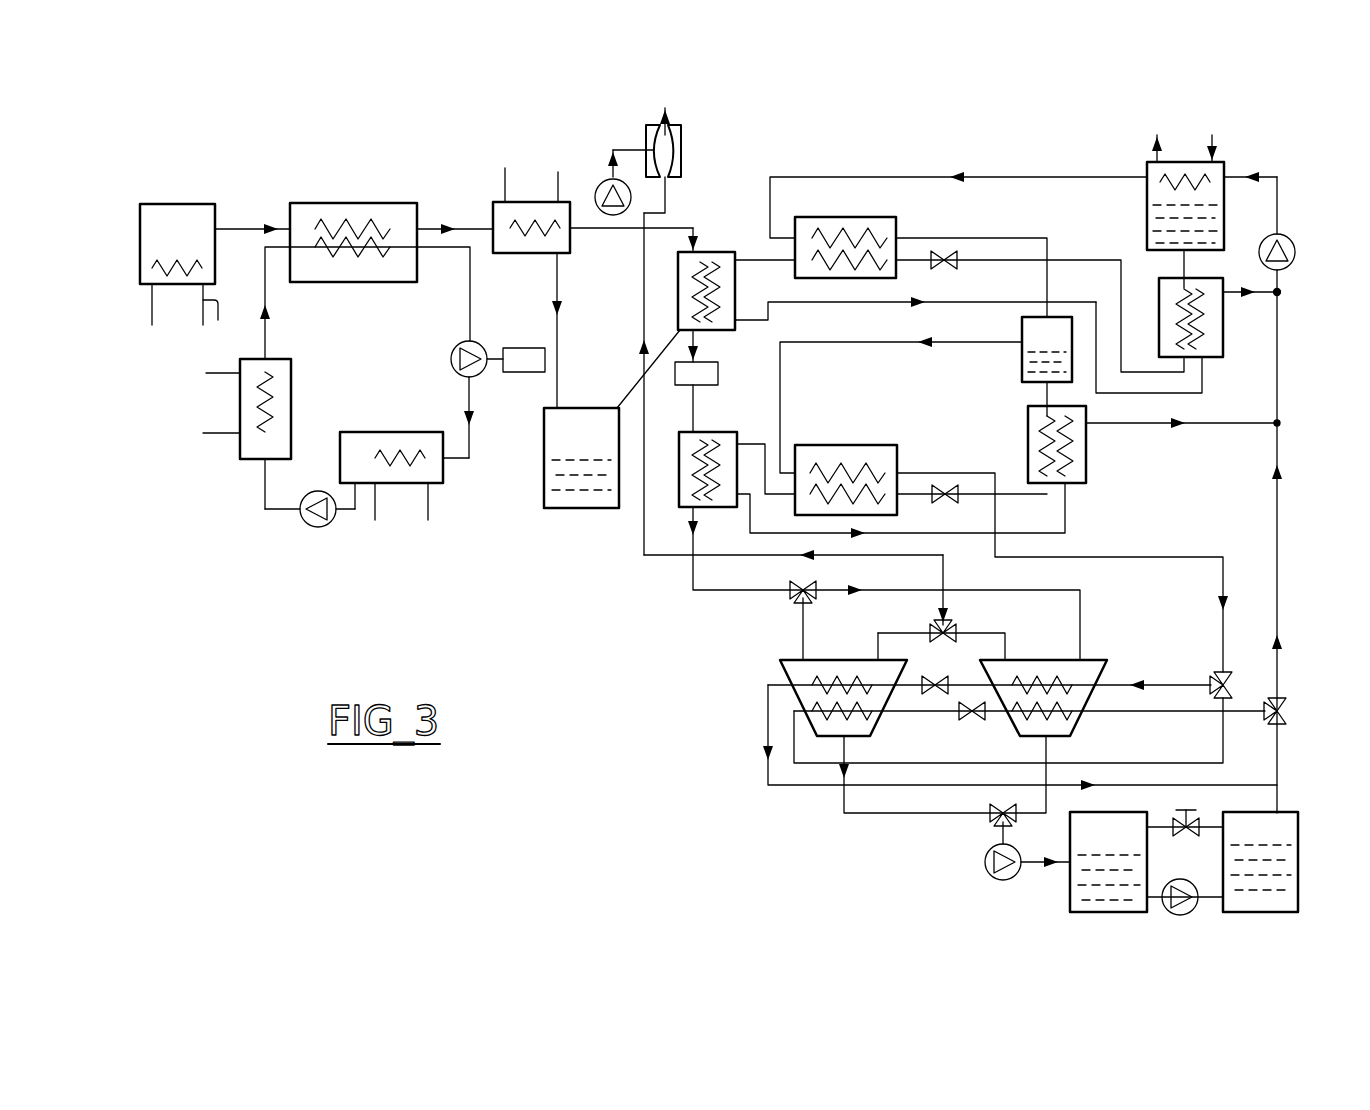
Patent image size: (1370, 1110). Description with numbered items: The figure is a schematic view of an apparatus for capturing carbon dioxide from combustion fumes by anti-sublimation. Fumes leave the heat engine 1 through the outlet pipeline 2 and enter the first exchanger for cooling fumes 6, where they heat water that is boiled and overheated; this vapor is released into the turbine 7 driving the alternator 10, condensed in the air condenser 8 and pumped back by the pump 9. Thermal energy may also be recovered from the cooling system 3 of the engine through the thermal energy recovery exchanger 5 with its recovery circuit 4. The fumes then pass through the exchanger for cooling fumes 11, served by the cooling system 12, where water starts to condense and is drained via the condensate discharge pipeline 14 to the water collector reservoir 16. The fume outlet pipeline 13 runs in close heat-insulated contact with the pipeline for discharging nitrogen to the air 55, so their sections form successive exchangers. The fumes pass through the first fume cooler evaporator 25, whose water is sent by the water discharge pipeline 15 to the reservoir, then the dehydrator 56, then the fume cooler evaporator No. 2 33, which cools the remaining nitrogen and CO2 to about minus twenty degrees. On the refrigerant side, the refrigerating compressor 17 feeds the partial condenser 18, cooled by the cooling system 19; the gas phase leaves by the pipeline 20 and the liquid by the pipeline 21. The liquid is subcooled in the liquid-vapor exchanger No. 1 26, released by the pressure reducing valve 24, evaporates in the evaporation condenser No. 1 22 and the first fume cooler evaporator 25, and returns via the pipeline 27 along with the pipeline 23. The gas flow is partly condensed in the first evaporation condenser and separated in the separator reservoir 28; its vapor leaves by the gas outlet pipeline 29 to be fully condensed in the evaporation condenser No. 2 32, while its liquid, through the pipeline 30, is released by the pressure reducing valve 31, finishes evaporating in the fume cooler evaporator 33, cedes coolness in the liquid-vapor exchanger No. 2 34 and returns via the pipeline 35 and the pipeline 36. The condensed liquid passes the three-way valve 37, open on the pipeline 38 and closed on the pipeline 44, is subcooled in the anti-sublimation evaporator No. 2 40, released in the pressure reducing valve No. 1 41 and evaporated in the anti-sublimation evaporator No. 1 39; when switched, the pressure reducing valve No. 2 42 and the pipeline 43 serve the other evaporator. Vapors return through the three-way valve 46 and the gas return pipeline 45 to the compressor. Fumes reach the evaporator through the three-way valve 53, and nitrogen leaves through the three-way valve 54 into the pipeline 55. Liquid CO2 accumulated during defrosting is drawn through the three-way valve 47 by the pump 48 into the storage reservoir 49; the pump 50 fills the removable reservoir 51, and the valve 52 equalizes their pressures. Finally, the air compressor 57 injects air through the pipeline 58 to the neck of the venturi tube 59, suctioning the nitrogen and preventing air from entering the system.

The heat engine 1 is at (180, 204).
The outlet pipeline of the heat engine 2 is at (236, 229).
The cooling system of the heat engine 3 is at (214, 327).
The energy recovery circuit of the engine 4 is at (203, 433).
The thermal energy recovery exchanger of the engine 5 is at (291, 378).
The first exchanger for cooling fumes 6 is at (350, 203).
The turbine 7 is at (451, 357).
The air condenser 8 is at (376, 432).
The pump 9 is at (310, 527).
The alternator 10 is at (520, 348).
The exchanger for cooling fumes 11 is at (493, 215).
The cooling system 12 is at (505, 168).
The fume outlet pipeline of the exchanger 13 is at (693, 232).
The pipeline for discharge of the condensate 14 is at (557, 282).
The water discharge pipeline of the first fume cooler evaporator 15 is at (638, 383).
The water collector reservoir 16 is at (544, 465).
The refrigerating compressor 17 is at (1295, 252).
The partial condenser 18 is at (1147, 170).
The cooling system of the refrigerating condenser 19 is at (1212, 140).
The pipeline 20 is at (885, 177).
The pipeline 21 is at (1184, 262).
The evaporation condenser No. 1 22 is at (850, 217).
The pipeline 23 is at (1047, 283).
The pressure reducing valve 24 is at (944, 250).
The first fume cooler evaporator 25 is at (735, 285).
The liquid-vapor exchanger No. 1 26 is at (1223, 325).
The pipeline 27 is at (1277, 295).
The separator reservoir 28 is at (1022, 365).
The gas outlet pipeline 29 is at (878, 342).
The pipeline 30 is at (1040, 398).
The pressure reducing valve 31 is at (942, 485).
The evaporation condenser No. 2 32 is at (845, 445).
The fume cooler evaporator No. 2 33 is at (679, 470).
The liquid-vapor exchanger No. 2 34 is at (1086, 455).
The pipeline 35 is at (1215, 423).
The pipeline 36 is at (1000, 540).
The three-way valve 37 is at (1232, 678).
The pipeline 38 is at (1115, 685).
The anti-sublimation evaporator No. 1 39 is at (780, 665).
The anti-sublimation evaporator No. 2 40 is at (1050, 660).
The pressure reducing valve No. 1 41 is at (932, 678).
The pressure reducing valve No. 2 42 is at (968, 720).
The pipeline 43 is at (768, 728).
The pipeline 44 is at (800, 768).
The gas return pipeline 45 is at (1277, 545).
The three-way valve 46 is at (1290, 711).
The three-way valve 47 is at (992, 818).
The pump 48 is at (985, 860).
The storage reservoir 49 is at (1070, 890).
The pump 50 is at (1172, 880).
The removable reservoir 51 is at (1298, 878).
The valve 52 is at (1200, 815).
The three-way valve 53 is at (800, 602).
The three-way valve 54 is at (950, 622).
The pipeline for discharging nitrogen to the air 55 is at (644, 310).
The dehydrator 56 is at (718, 375).
The air compressor 57 is at (595, 188).
The pipeline 58 is at (612, 150).
The venturi tube 59 is at (682, 150).